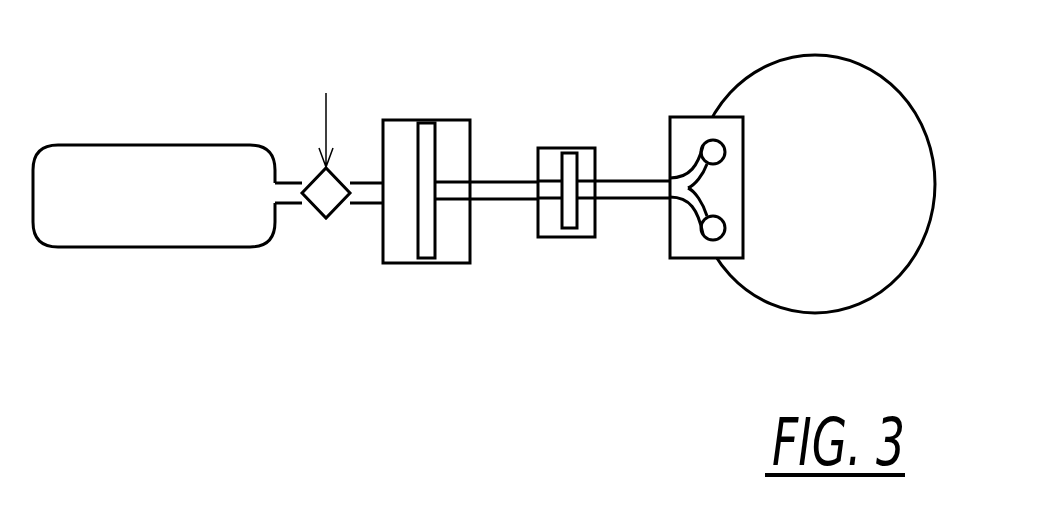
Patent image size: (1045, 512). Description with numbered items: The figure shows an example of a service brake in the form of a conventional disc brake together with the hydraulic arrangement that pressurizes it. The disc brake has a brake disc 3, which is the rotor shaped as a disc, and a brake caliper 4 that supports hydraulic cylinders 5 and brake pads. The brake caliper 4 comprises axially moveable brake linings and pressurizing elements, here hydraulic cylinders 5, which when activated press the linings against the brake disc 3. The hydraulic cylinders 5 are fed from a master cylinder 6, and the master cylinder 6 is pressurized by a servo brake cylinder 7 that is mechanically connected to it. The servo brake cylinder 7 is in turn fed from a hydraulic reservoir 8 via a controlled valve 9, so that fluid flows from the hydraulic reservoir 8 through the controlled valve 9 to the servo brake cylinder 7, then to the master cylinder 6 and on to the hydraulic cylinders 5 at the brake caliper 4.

The brake disc 3 is at (864, 239).
The brake caliper 4 is at (683, 243).
The hydraulic cylinders 5 is at (713, 150).
The master cylinder 6 is at (588, 162).
The servo brake cylinder 7 is at (397, 132).
The hydraulic reservoir 8 is at (163, 157).
The controlled valve 9 is at (332, 216).